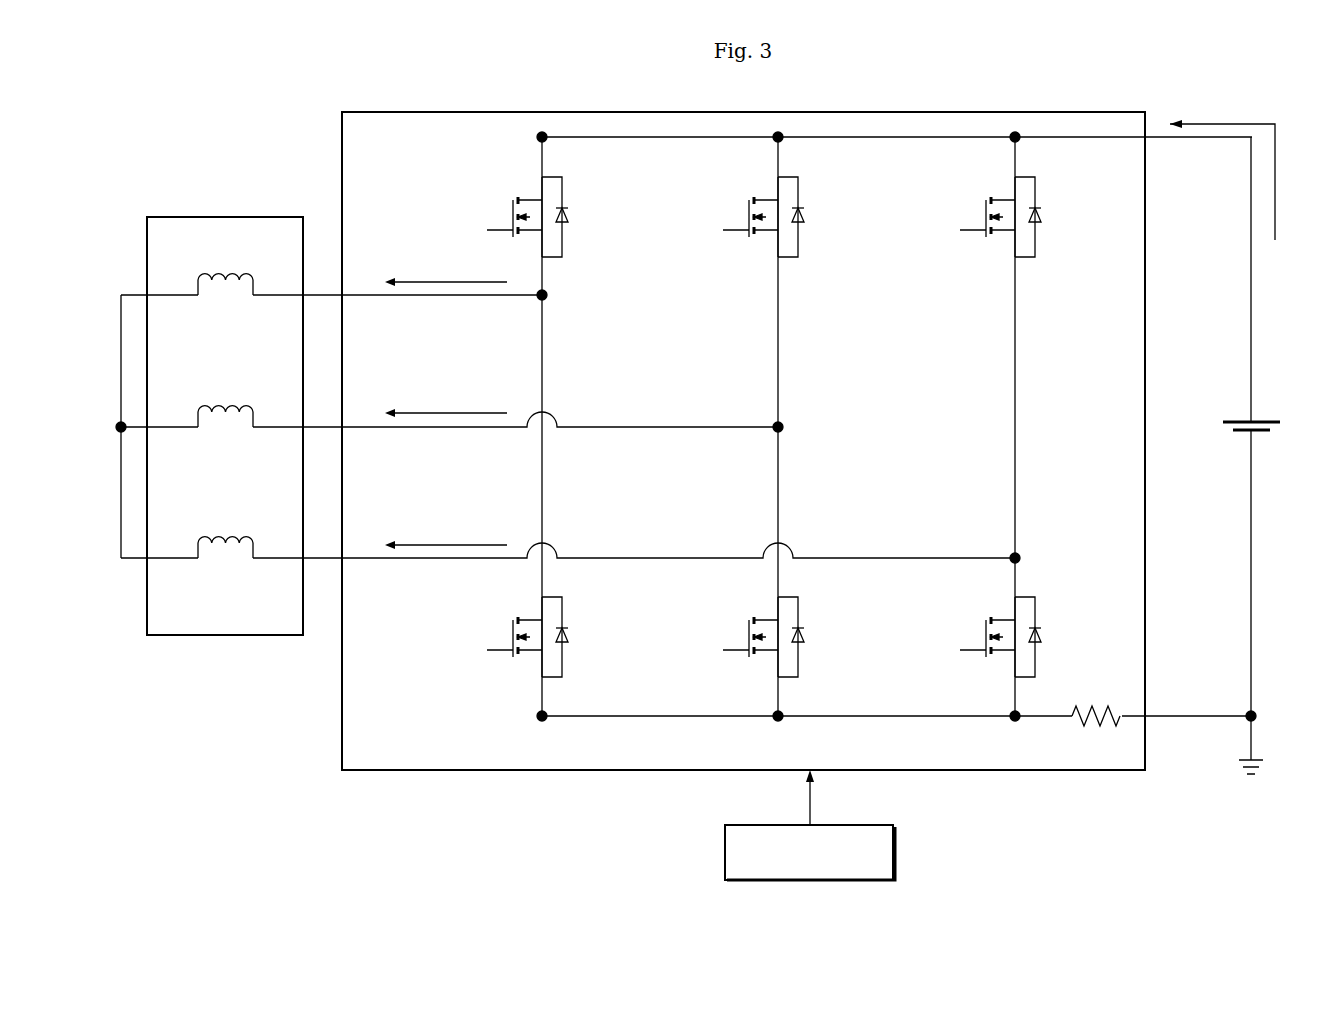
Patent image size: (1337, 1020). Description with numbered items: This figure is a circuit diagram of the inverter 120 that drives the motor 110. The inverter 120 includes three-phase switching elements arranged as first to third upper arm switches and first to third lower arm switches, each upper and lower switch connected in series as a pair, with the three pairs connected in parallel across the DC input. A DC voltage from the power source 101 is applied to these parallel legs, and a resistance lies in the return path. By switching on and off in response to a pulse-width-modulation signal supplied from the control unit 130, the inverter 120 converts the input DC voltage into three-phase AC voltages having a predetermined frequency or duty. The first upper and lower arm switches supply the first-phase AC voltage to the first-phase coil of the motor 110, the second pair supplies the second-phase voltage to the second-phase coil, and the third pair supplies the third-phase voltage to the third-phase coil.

The commercial AC power source 101 is at (1285, 390).
The motor 110 is at (226, 217).
The inverter 120 is at (510, 770).
The control unit 130 is at (725, 852).